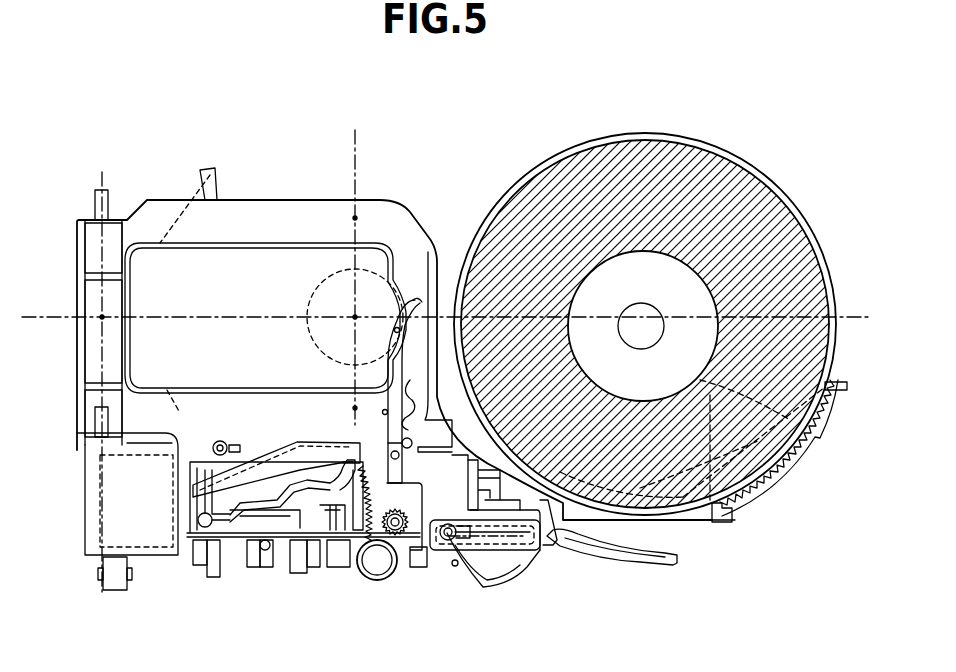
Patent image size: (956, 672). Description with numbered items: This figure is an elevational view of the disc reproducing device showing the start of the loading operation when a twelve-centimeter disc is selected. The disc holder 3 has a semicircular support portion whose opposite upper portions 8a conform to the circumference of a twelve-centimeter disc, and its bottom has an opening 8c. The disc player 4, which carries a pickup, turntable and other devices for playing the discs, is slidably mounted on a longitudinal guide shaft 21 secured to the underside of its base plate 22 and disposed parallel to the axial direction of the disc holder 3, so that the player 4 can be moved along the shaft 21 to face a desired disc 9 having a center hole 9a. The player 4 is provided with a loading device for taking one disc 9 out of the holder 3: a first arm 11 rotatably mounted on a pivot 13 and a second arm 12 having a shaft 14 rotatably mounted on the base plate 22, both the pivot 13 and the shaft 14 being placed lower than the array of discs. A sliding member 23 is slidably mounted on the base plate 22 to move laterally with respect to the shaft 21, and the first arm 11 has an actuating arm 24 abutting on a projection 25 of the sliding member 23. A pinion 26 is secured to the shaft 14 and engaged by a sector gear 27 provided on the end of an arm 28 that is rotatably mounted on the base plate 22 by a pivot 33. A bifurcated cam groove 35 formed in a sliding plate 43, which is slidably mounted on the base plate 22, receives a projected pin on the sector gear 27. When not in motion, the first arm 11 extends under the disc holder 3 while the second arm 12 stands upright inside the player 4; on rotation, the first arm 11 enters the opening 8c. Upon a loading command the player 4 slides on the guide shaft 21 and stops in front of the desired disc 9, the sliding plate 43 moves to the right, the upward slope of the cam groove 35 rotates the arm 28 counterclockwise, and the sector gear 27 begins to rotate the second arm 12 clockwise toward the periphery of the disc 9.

The disc holder 3 is at (833, 382).
The disc player 4 is at (245, 222).
The upper portions 8a is at (795, 455).
The opening 8c is at (718, 525).
The disc 9 is at (680, 172).
The center hole 9a is at (660, 303).
The first arm 11 is at (653, 562).
The second arm 12 is at (403, 303).
The pivot 13 is at (447, 537).
The shaft 14 is at (395, 532).
The guide shaft 21 is at (373, 567).
The base plate 22 is at (237, 543).
The sliding member 23 is at (503, 557).
The actuating arm 24 is at (470, 513).
The projection 25 is at (557, 540).
The pinion 26 is at (337, 540).
The sector gear 27 is at (343, 460).
The arm 28 is at (273, 488).
The pivot 33 is at (205, 507).
The bifurcated cam groove 35 is at (310, 447).
The sliding plate 43 is at (287, 530).